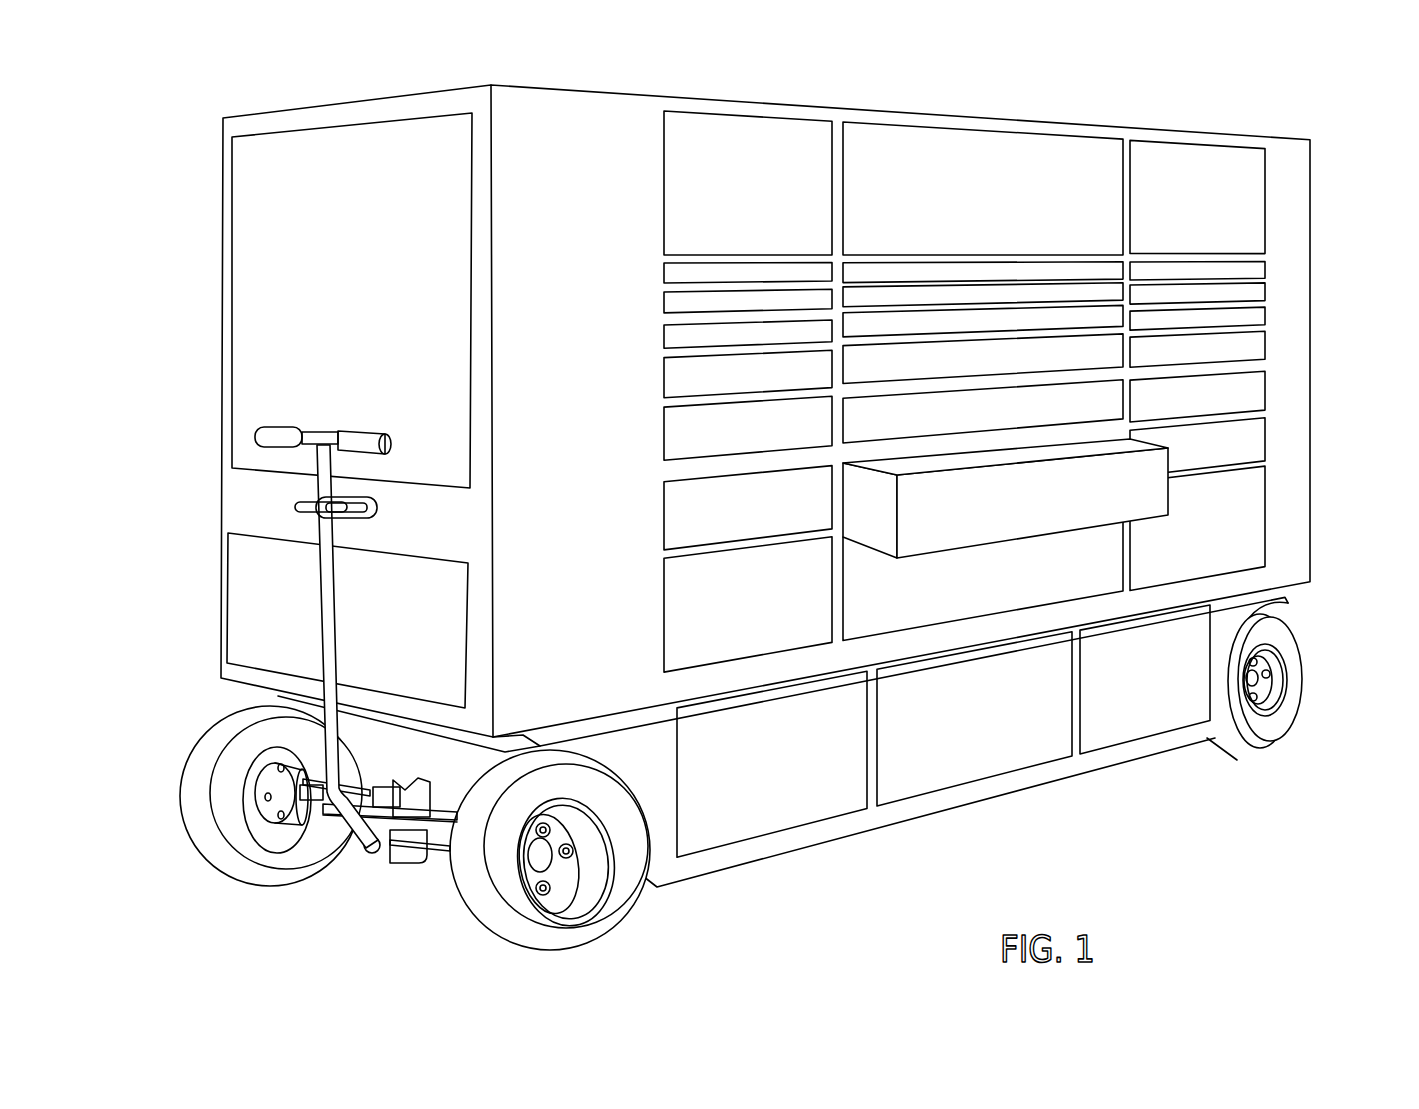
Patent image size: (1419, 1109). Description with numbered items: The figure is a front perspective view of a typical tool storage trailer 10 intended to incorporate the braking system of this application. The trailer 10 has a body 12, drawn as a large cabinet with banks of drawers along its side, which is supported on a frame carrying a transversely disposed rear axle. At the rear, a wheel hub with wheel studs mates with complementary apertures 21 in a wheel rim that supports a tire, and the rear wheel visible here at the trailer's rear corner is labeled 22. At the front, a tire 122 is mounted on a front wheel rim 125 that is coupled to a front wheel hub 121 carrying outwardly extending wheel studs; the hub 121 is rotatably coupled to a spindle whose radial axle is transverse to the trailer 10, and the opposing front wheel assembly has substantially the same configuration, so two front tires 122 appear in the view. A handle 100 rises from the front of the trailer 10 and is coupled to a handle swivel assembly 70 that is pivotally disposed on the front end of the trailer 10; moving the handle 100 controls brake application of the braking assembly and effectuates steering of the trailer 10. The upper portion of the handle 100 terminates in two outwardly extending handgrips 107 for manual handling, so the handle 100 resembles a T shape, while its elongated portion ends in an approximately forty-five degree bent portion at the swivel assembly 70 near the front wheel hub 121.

The tool storage trailer 10 is at (752, 523).
The body 12 is at (1298, 330).
The complementary apertures 21 is at (1268, 660).
The rear wheel 22 is at (1277, 701).
The handle swivel assembly 70 is at (367, 876).
The handle 100 is at (330, 608).
The handgrips 107 is at (318, 443).
The front wheel hub 121 is at (288, 812).
The tire 122 is at (409, 844).
The front wheel rim 125 is at (563, 886).